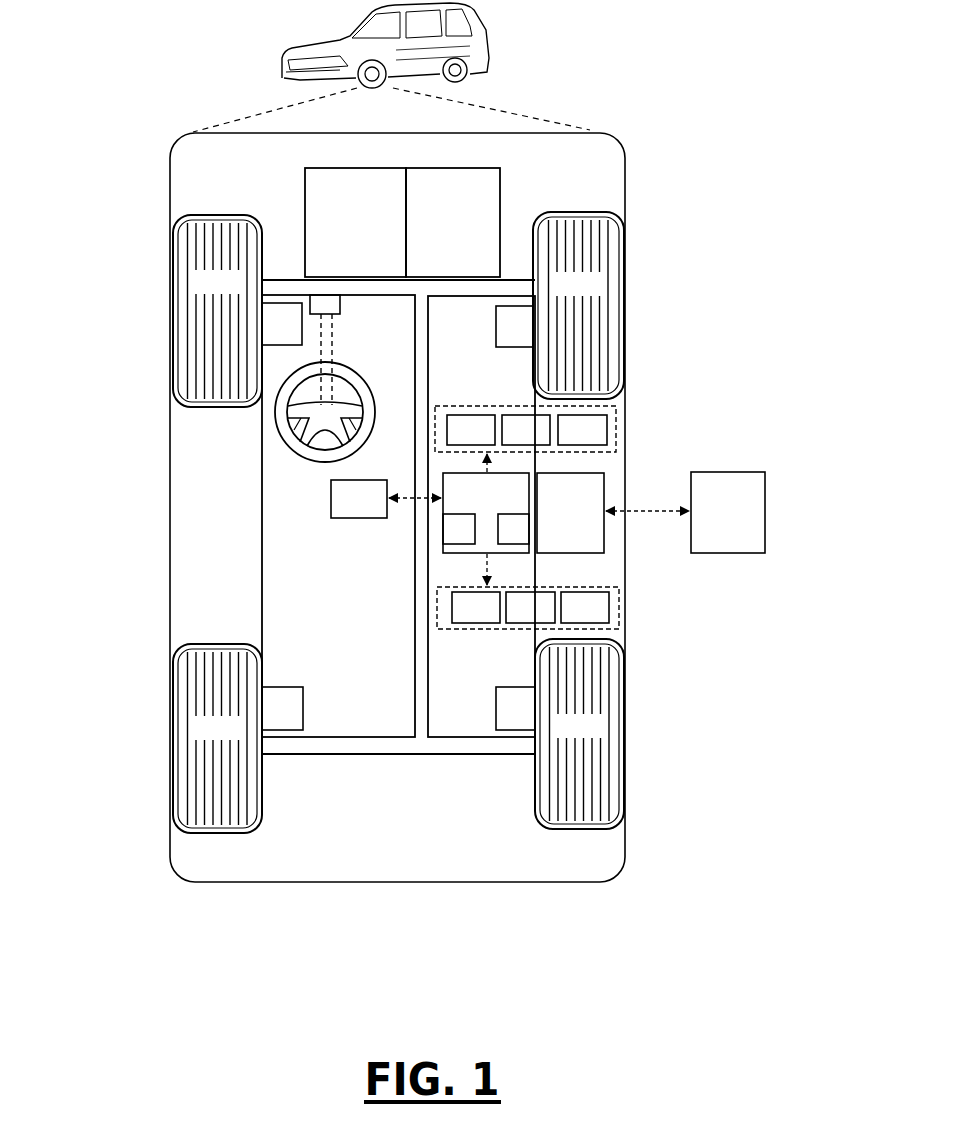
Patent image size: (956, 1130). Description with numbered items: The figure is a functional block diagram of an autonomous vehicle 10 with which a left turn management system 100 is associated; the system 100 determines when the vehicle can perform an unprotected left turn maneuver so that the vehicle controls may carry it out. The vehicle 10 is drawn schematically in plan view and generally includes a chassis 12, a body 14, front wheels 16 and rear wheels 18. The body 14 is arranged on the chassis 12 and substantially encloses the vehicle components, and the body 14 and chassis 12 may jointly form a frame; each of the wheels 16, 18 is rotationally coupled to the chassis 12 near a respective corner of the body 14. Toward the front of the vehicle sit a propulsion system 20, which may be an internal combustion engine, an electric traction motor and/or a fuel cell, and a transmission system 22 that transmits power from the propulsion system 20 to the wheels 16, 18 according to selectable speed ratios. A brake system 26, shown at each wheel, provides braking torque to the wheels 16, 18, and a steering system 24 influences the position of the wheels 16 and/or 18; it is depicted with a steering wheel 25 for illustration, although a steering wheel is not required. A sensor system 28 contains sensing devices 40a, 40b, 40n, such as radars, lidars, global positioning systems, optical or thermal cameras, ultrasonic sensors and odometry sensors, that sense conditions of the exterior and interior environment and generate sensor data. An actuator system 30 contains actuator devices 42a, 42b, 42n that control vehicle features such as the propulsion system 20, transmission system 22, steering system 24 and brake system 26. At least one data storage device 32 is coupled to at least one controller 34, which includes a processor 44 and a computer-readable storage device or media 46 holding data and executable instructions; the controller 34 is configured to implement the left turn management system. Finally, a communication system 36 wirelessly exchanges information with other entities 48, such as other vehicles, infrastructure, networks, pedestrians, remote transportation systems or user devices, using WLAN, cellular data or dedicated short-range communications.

The vehicle 10 is at (270, 42).
The chassis 12 is at (425, 756).
The body 14 is at (170, 472).
The front wheels 16 is at (224, 296).
The rear wheels 18 is at (227, 742).
The propulsion system 20 is at (343, 232).
The transmission system 22 is at (440, 232).
The steering system 24 is at (300, 472).
The steering wheel 25 is at (359, 366).
The brake system 26 is at (271, 333).
The sensor system 28 is at (480, 405).
The actuator system 30 is at (465, 630).
The data storage device 32 is at (347, 508).
The controller 34 is at (475, 504).
The communication system 36 is at (558, 521).
The sensing device 40a is at (456, 439).
The sensing device 40b is at (511, 439).
The sensing device 40n is at (567, 439).
The actuator device 42a is at (461, 616).
The actuator device 42b is at (515, 616).
The actuator device 42n is at (570, 616).
The processor 44 is at (448, 538).
The computer-readable storage device or media 46 is at (502, 538).
The other entities 48 is at (716, 521).
The left turn management system 100 is at (655, 345).